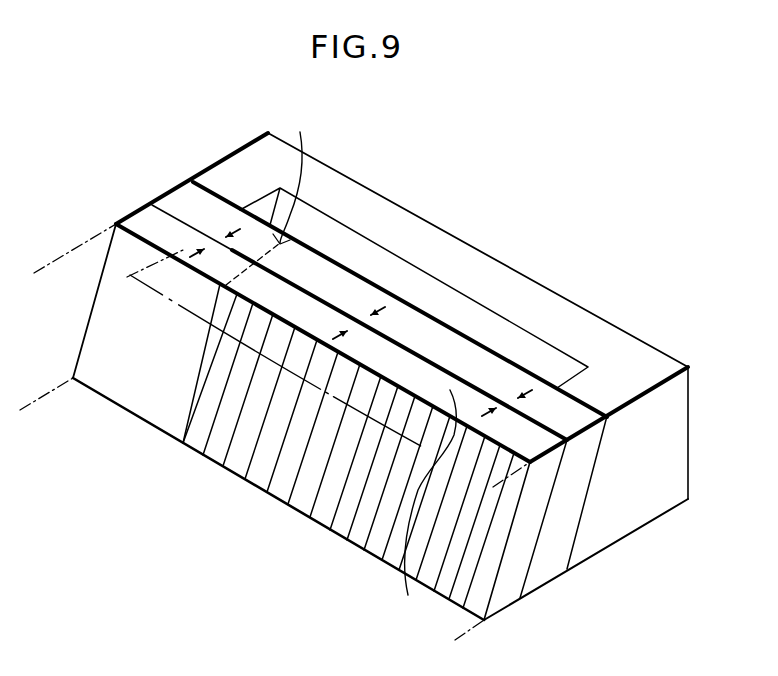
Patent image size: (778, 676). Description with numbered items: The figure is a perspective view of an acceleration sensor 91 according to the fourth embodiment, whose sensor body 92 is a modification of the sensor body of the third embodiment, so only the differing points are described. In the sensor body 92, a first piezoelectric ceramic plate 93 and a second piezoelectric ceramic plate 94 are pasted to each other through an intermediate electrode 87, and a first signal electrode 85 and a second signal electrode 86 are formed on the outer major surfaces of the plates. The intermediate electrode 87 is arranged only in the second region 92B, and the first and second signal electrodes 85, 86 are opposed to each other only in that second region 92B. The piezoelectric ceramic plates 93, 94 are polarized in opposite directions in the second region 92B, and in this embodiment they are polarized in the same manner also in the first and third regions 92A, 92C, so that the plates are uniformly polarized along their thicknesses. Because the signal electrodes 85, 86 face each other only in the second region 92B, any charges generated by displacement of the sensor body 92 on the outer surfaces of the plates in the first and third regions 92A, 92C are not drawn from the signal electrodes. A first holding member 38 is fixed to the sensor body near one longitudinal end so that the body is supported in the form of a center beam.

The acceleration sensor 91 is at (242, 140).
The sensor body 92 is at (143, 419).
The first region 92A is at (155, 240).
The second region 92B is at (400, 329).
The third region 92C is at (576, 419).
The first piezoelectric ceramic plate 93 is at (273, 293).
The second piezoelectric ceramic plate 94 is at (323, 277).
The second signal electrode 86 is at (440, 321).
The intermediate electrode 87 is at (442, 364).
The first signal electrode 85 is at (300, 482).
The first holding member 38 is at (657, 483).